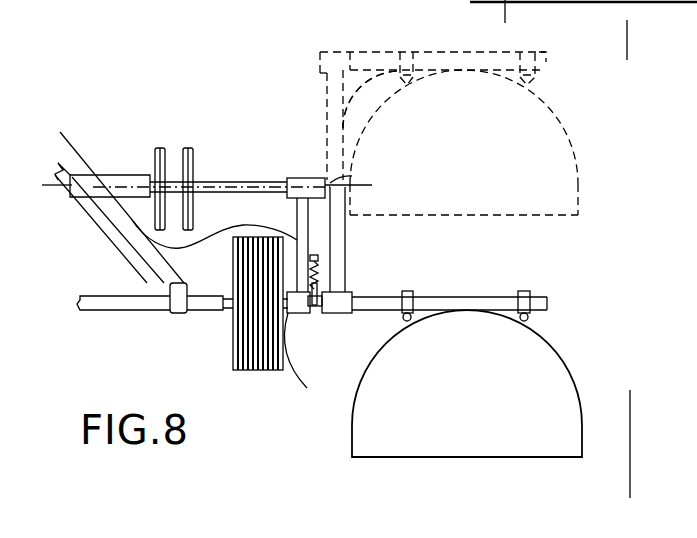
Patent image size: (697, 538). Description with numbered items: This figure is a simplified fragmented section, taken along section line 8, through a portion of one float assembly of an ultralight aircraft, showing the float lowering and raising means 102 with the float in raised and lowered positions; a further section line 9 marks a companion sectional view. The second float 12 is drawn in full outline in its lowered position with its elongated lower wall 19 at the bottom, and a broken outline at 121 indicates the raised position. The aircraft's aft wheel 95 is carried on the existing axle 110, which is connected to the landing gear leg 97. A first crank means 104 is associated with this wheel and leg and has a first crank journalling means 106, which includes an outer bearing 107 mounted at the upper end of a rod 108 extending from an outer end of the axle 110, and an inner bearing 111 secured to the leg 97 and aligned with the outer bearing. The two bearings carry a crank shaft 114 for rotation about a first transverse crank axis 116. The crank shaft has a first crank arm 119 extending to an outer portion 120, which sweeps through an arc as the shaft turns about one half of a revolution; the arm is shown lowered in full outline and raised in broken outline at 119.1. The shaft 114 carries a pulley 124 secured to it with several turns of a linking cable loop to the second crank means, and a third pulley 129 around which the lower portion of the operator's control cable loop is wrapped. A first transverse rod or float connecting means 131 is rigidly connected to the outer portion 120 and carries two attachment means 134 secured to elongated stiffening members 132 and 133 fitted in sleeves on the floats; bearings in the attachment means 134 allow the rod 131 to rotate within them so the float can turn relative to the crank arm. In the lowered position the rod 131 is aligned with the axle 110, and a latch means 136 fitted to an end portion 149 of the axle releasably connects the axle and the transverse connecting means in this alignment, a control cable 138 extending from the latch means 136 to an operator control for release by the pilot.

The section line 8 is at (483, 13).
The section line 9 is at (563, 33).
The second float 12 is at (560, 360).
The lower wall 19 is at (472, 457).
The aft wheel 95 is at (262, 372).
The leg 97 is at (127, 235).
The float lowering and raising means 102 is at (312, 148).
The first crank means 104 is at (527, 243).
The first crank journalling means 106 is at (203, 132).
The outer bearing 107 is at (318, 178).
The rod 108 is at (308, 213).
The axle 110 is at (210, 302).
The inner bearing 111 is at (140, 173).
The crank shaft 114 is at (216, 180).
The first transverse crank axis 116 is at (372, 185).
The first crank arm 119 is at (342, 255).
The raised position of crank arm 119.1 is at (363, 125).
The outer portion of crank arm 120 is at (338, 313).
The housing in raised position (phantom) 121 is at (580, 176).
The pulley 124 is at (194, 208).
The third pulley 129 is at (155, 170).
The first transverse rod or float connecting means 131 is at (465, 296).
The elongated stiffening member 132 is at (409, 322).
The elongated stiffening member 133 is at (522, 322).
The attachment means 134 is at (407, 291).
The latch means 136 is at (315, 306).
The control cable 138 is at (180, 248).
The end portion of axle 149 is at (306, 363).